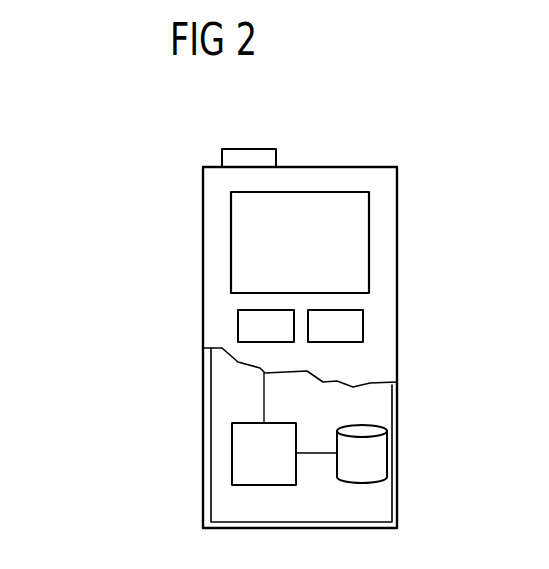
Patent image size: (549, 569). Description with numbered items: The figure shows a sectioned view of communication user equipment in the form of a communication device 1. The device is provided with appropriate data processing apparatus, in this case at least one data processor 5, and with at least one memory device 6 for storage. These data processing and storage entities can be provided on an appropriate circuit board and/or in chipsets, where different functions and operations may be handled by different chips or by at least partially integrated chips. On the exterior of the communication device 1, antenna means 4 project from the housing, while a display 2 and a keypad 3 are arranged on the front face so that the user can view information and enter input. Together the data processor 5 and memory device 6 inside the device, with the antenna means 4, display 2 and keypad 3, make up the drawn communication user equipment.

The communication device 1 is at (343, 176).
The display 2 is at (369, 242).
The keypad 3 is at (238, 326).
The antenna means 4 is at (249, 158).
The data processor 5 is at (297, 467).
The memory device 6 is at (335, 442).